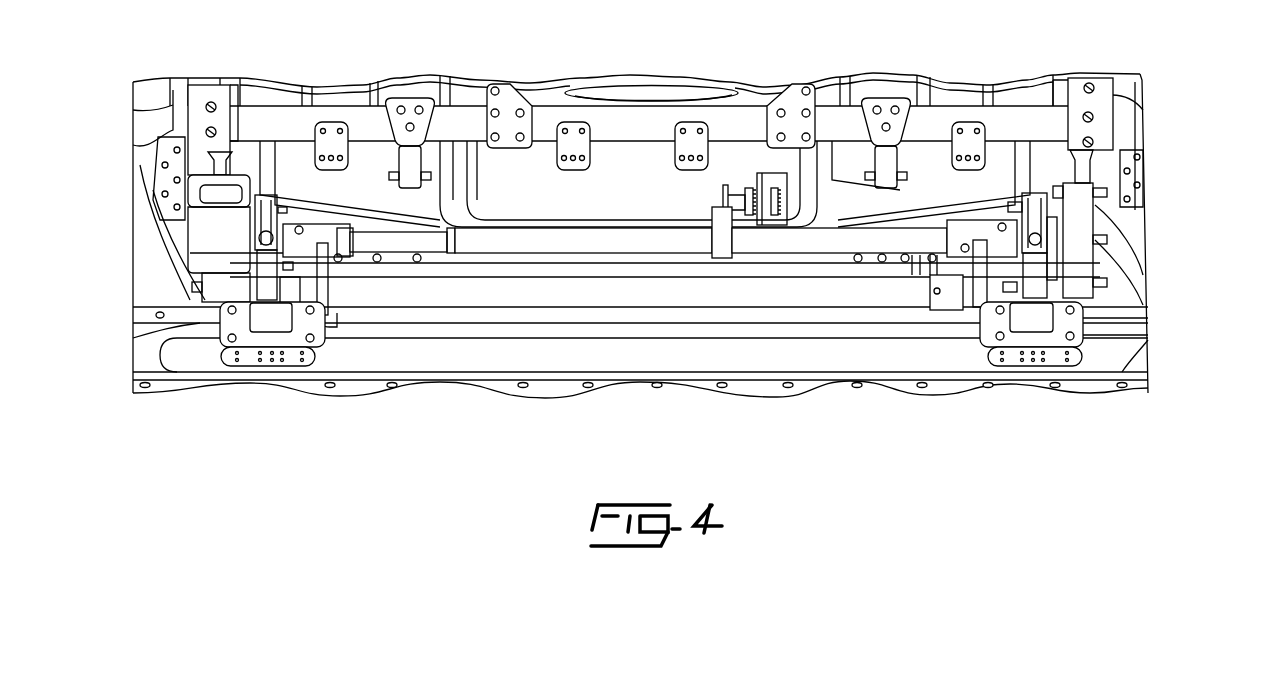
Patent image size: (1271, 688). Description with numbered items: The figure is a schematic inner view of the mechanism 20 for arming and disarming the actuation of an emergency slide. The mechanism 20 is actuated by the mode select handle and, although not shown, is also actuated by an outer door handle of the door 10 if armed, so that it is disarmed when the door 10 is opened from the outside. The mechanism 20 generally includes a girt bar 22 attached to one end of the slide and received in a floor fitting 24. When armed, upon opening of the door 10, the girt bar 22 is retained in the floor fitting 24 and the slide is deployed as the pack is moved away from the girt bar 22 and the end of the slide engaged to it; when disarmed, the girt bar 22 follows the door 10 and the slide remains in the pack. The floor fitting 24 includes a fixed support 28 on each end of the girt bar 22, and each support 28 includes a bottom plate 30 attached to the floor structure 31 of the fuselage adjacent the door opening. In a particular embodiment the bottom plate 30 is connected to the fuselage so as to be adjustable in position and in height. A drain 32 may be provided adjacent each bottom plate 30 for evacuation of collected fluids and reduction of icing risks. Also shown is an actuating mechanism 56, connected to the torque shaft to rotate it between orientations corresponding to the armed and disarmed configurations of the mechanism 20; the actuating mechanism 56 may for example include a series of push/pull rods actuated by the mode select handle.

The door 10 is at (633, 163).
The mechanism 20 is at (1175, 118).
The girt bar 22 is at (875, 293).
The floor fitting 24 is at (1104, 357).
The fixed support 28 is at (1085, 320).
The bottom plate 30 is at (1037, 333).
The floor structure 31 is at (372, 363).
The drain 32 is at (1012, 362).
The actuating mechanism 56 is at (739, 170).